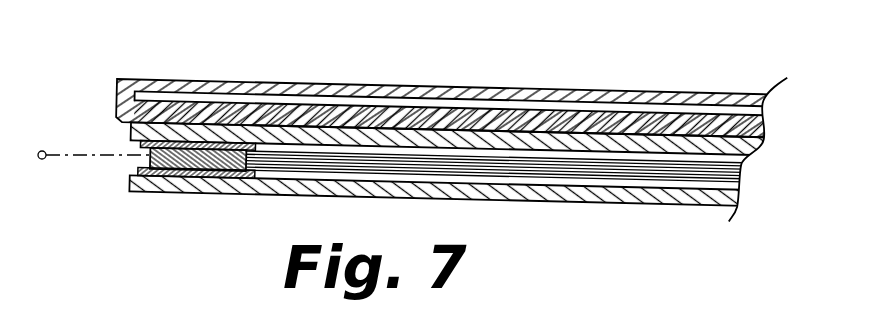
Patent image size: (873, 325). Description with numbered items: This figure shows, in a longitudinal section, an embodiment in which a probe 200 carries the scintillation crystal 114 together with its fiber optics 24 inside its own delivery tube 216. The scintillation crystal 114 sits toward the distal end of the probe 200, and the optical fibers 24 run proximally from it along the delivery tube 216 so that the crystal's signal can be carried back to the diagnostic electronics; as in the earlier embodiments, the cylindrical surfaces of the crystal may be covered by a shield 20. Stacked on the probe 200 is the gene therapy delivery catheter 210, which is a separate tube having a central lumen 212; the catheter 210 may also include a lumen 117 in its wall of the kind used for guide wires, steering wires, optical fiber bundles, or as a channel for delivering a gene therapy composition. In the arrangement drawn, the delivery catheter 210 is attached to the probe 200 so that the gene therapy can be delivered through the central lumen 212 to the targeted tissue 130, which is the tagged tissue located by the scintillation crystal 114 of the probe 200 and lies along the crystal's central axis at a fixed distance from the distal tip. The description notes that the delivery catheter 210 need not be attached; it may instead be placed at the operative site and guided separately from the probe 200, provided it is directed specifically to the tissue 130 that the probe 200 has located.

The lumen 117 is at (302, 100).
The central lumen 212 is at (415, 103).
The gene therapy delivery catheter 210 is at (529, 80).
The optical fibers 24 is at (700, 170).
The target 130 is at (42, 160).
The scintillation crystal 114 is at (190, 160).
The shield 20 is at (216, 176).
The probe 200 is at (527, 215).
The delivery tube 216 is at (672, 193).